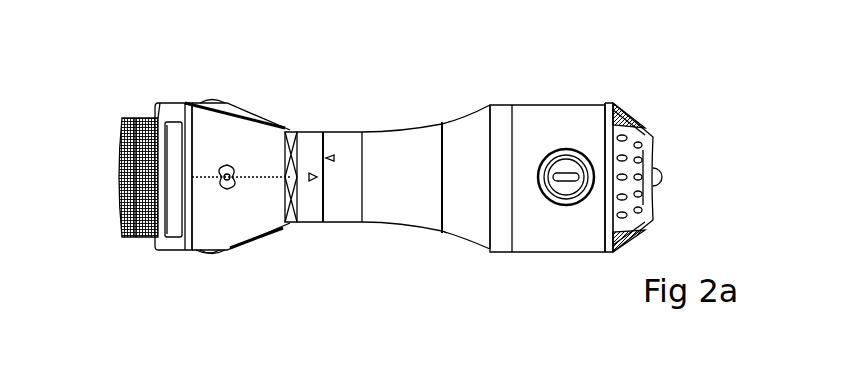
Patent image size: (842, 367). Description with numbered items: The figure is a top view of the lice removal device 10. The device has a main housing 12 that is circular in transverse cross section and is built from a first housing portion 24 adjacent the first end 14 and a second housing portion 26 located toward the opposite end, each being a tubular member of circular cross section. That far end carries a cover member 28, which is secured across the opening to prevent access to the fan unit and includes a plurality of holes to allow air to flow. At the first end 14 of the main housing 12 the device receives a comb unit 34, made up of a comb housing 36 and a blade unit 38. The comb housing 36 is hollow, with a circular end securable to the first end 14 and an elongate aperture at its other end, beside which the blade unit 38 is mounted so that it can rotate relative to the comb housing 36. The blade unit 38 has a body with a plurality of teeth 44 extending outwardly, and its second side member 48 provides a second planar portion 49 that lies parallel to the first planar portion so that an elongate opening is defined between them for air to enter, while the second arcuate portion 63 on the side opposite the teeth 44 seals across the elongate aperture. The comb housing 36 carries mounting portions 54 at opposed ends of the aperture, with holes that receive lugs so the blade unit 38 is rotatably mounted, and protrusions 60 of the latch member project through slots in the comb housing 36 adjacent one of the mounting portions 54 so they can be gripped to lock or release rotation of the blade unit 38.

The lice removal device 10 is at (542, 75).
The main housing 12 is at (443, 242).
The first end 14 is at (323, 130).
The first housing portion 24 is at (410, 148).
The second housing portion 26 is at (570, 102).
The cover member 28 is at (650, 197).
The comb unit 34 is at (235, 252).
The comb housing 36 is at (262, 133).
The blade unit 38 is at (147, 100).
The teeth 44 is at (117, 242).
The second side member 48 is at (173, 208).
The second planar portion 49 is at (163, 107).
The mounting portions 54 is at (160, 255).
The protrusions 60 is at (203, 255).
The second arcuate portion 63 is at (177, 148).